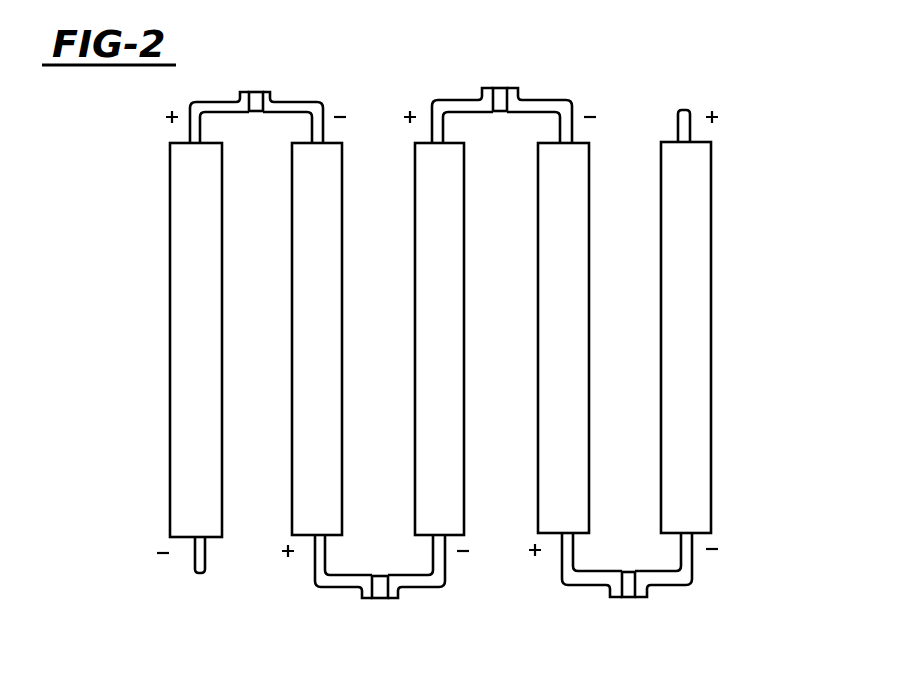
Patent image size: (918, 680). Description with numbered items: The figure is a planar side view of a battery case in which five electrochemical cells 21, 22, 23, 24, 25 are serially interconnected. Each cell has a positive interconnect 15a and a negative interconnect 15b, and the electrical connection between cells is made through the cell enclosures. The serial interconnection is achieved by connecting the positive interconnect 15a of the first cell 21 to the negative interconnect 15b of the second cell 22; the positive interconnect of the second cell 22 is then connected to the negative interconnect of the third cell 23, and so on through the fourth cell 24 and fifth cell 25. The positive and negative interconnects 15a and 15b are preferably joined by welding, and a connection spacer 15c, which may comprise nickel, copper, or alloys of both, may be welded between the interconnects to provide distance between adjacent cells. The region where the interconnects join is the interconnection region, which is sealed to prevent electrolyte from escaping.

The positive interconnect 15a is at (226, 100).
The negative interconnect 15b is at (300, 100).
The connection spacer 15c is at (260, 116).
The first cell 21 is at (203, 362).
The second cell 22 is at (330, 392).
The third cell 23 is at (451, 364).
The fourth cell 24 is at (576, 347).
The fifth cell 25 is at (718, 326).